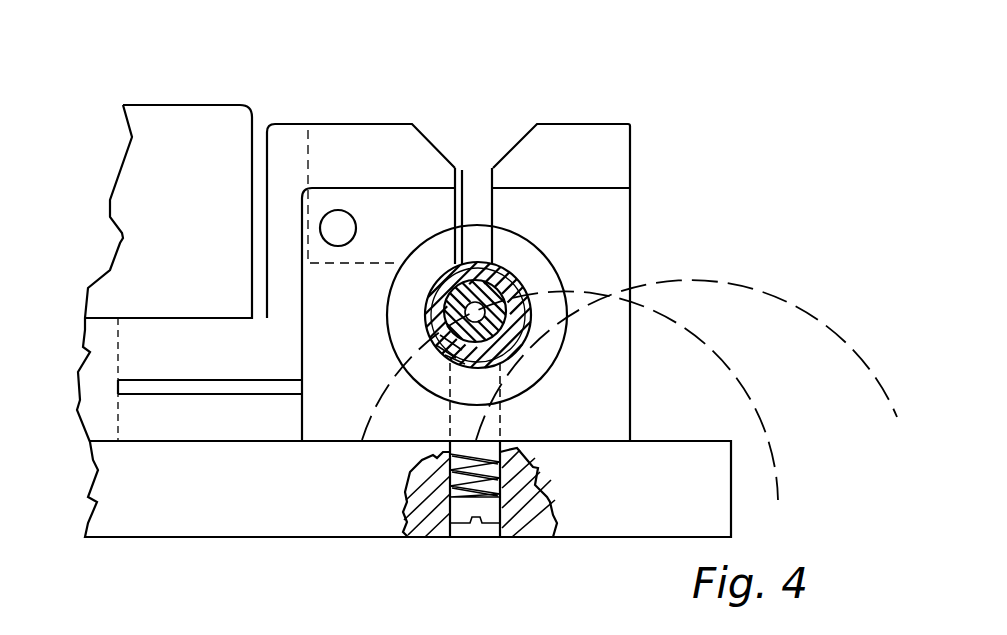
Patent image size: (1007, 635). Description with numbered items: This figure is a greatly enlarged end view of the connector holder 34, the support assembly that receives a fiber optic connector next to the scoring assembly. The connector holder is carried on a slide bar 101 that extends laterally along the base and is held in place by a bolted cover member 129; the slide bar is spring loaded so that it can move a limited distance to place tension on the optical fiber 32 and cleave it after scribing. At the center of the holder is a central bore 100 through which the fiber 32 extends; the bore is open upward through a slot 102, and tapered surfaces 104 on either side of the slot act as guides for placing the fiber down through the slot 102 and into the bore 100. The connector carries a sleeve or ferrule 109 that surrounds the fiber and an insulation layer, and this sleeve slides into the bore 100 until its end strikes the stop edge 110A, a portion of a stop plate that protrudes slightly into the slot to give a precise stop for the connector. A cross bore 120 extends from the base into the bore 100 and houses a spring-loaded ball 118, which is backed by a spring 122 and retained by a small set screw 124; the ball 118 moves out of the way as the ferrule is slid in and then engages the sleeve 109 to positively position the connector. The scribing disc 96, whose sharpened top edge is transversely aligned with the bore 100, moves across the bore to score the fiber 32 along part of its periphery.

The slide bar 101 is at (103, 360).
The cover member 129 is at (160, 118).
The spring-loaded ball 118 is at (633, 258).
The connector holder 34 is at (423, 236).
The tapered surfaces 104 is at (522, 135).
The stop edge 110A is at (467, 188).
The slot 102 is at (479, 188).
The optical fiber 32 is at (491, 261).
The central bore 100 is at (503, 293).
The sleeve or ferrule 109 is at (438, 292).
The scribing disc 96 is at (700, 278).
The cross bore 120 is at (465, 443).
The spring 122 is at (420, 462).
The set screw 124 is at (556, 500).